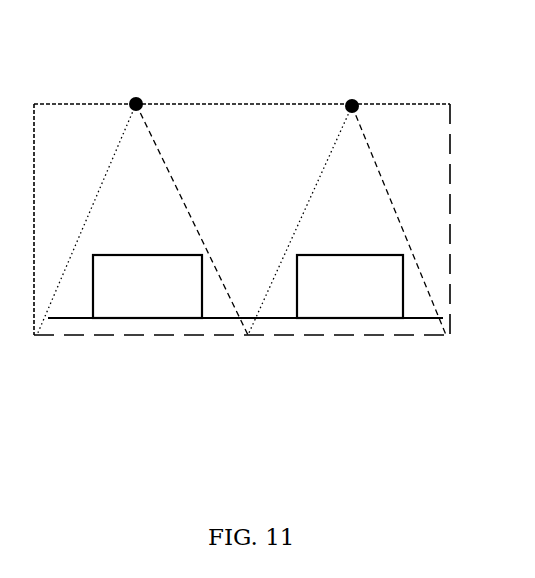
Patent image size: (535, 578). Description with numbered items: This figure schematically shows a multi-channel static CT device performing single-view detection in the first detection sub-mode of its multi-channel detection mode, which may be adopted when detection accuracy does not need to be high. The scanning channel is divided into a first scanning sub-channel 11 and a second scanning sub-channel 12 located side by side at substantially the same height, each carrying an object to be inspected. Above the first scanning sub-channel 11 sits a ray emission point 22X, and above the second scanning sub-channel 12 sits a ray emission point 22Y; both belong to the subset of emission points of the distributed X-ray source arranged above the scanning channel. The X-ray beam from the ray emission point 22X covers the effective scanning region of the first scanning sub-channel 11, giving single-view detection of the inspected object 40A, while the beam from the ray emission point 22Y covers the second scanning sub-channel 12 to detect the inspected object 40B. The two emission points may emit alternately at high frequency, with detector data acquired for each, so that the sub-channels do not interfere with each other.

The first scanning sub-channel 11 is at (202, 320).
The second scanning sub-channel 12 is at (417, 322).
The ray emission point 22X is at (136, 104).
The ray emission point 22Y is at (352, 106).
The inspected object 40A is at (140, 293).
The inspected object 40B is at (355, 295).